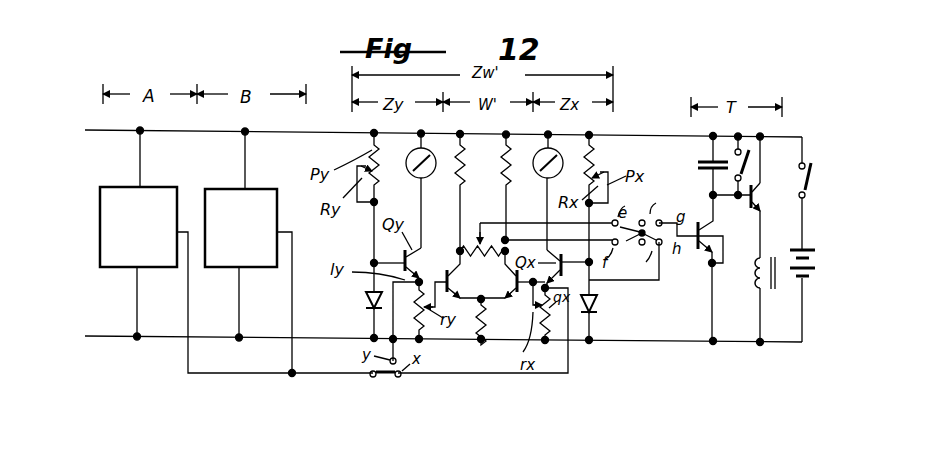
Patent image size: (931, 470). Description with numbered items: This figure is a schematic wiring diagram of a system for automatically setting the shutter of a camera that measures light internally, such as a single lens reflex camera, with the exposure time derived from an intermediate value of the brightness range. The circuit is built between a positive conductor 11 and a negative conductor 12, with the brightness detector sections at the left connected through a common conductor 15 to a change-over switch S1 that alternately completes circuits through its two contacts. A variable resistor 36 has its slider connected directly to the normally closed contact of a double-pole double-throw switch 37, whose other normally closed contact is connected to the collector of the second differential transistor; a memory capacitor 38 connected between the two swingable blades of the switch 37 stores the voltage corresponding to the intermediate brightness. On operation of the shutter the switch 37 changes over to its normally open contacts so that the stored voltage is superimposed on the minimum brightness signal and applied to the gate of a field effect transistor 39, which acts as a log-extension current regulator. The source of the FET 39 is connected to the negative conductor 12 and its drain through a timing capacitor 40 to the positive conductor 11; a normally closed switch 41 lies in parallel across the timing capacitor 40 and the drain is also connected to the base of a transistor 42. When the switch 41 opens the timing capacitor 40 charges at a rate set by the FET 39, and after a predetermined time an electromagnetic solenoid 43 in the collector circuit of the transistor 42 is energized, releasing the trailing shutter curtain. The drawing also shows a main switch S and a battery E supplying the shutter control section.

The positive conductor 11 is at (642, 135).
The negative conductor 12 is at (648, 343).
The common conductor 15 is at (317, 375).
The variable resistor 36 is at (484, 284).
The double-pole double-throw switch 37 is at (643, 247).
The memory capacitor 38 is at (633, 218).
The field effect transistor 39 is at (697, 245).
The timing capacitor 40 is at (697, 168).
The normally closed switch 41 is at (752, 162).
The transistor 42 is at (769, 195).
The electromagnetic solenoid 43 is at (756, 278).
The change-over switch S1 is at (378, 380).
The main switch S is at (812, 183).
The battery E is at (817, 259).